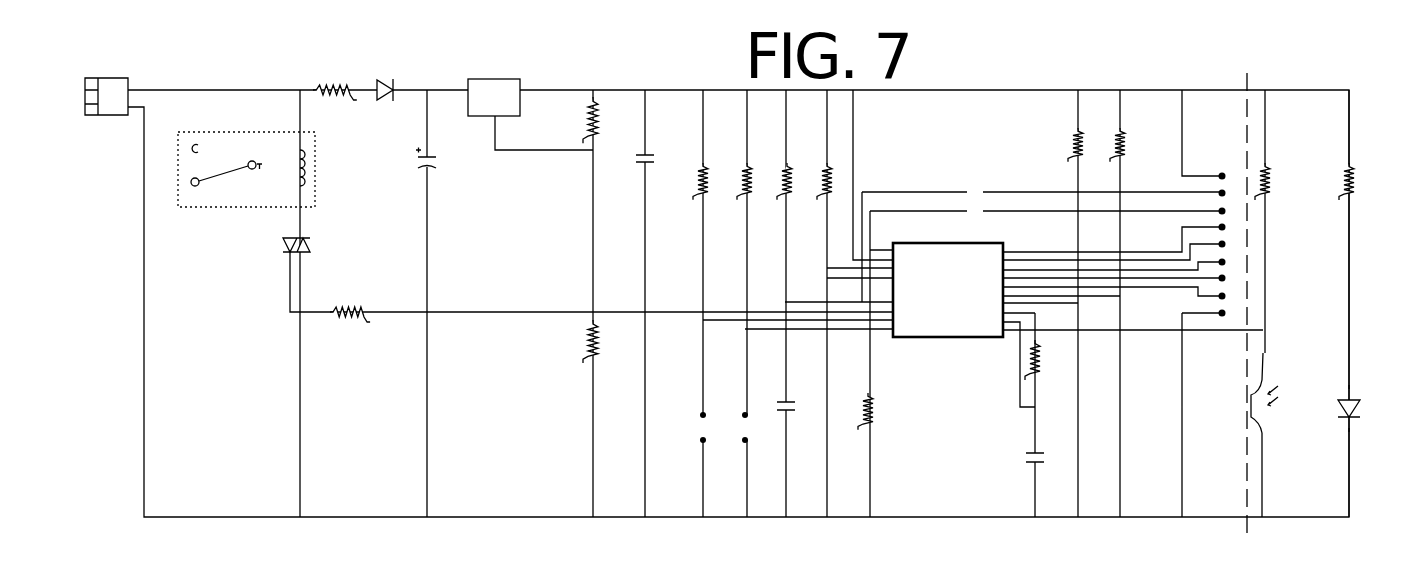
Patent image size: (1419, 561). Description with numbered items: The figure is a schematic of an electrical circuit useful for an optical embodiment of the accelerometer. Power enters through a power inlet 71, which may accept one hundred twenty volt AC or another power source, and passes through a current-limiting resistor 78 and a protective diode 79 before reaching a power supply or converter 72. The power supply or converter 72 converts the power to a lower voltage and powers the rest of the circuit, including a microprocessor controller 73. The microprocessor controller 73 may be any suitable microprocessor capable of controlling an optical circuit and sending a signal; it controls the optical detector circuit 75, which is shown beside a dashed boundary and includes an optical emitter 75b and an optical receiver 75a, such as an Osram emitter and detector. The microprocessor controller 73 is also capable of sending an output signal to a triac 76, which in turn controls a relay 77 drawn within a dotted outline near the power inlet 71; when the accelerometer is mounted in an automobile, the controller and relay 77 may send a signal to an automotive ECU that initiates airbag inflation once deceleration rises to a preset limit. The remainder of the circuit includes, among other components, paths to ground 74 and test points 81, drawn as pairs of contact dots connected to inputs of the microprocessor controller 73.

The power inlet 71 is at (128, 80).
The power supply or converter 72 is at (507, 90).
The microprocessor controller 73 is at (973, 243).
The paths to ground 74 is at (1035, 420).
The optical detector circuit 75 is at (1310, 258).
The optical receiver 75a is at (1265, 354).
The optical emitter 75b is at (1352, 328).
The triac 76 is at (311, 246).
The relay 77 is at (318, 185).
The current-limiting resistor 78 is at (352, 84).
The protective diode 79 is at (393, 86).
The test points 81 is at (703, 395).